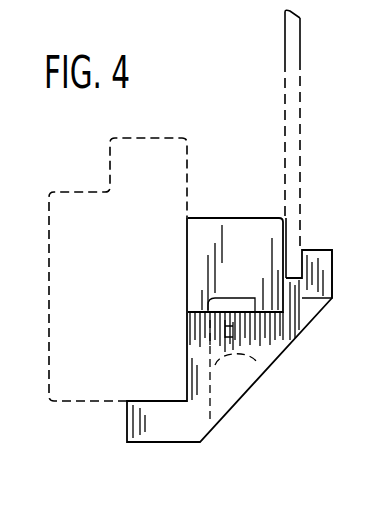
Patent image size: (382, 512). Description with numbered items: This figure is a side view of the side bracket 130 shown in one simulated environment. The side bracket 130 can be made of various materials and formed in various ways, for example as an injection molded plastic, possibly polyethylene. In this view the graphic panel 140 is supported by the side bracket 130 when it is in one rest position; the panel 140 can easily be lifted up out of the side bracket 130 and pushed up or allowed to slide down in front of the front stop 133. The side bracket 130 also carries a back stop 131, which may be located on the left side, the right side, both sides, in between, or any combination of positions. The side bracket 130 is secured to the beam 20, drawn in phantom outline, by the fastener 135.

The beam 20 is at (73, 401).
The side bracket 130 is at (237, 403).
The back stop 131 is at (233, 218).
The front stop 133 is at (315, 250).
The fastener 135 is at (262, 368).
The graphic panel 140 is at (285, 42).